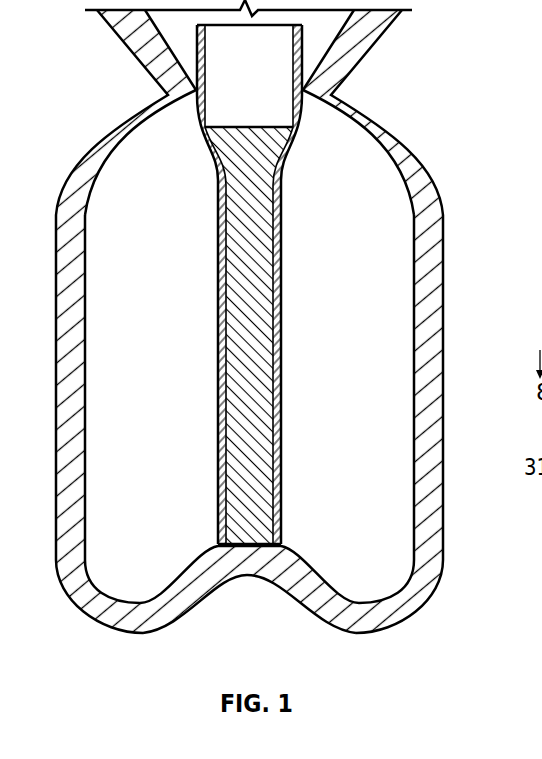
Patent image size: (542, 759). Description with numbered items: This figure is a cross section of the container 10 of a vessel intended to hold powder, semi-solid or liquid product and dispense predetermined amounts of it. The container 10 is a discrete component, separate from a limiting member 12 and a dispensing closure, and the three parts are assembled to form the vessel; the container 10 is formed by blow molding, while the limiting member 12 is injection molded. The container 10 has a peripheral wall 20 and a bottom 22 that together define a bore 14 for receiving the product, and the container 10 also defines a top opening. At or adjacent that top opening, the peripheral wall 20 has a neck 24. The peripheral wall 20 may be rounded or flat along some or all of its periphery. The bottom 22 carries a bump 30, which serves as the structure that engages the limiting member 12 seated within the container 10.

The container 10 is at (274, 342).
The limiting member 12 is at (284, 300).
The bore 14 is at (86, 486).
The peripheral wall 20 is at (443, 550).
The bottom 22 is at (380, 624).
The neck 24 is at (332, 97).
The bump 30 is at (233, 571).